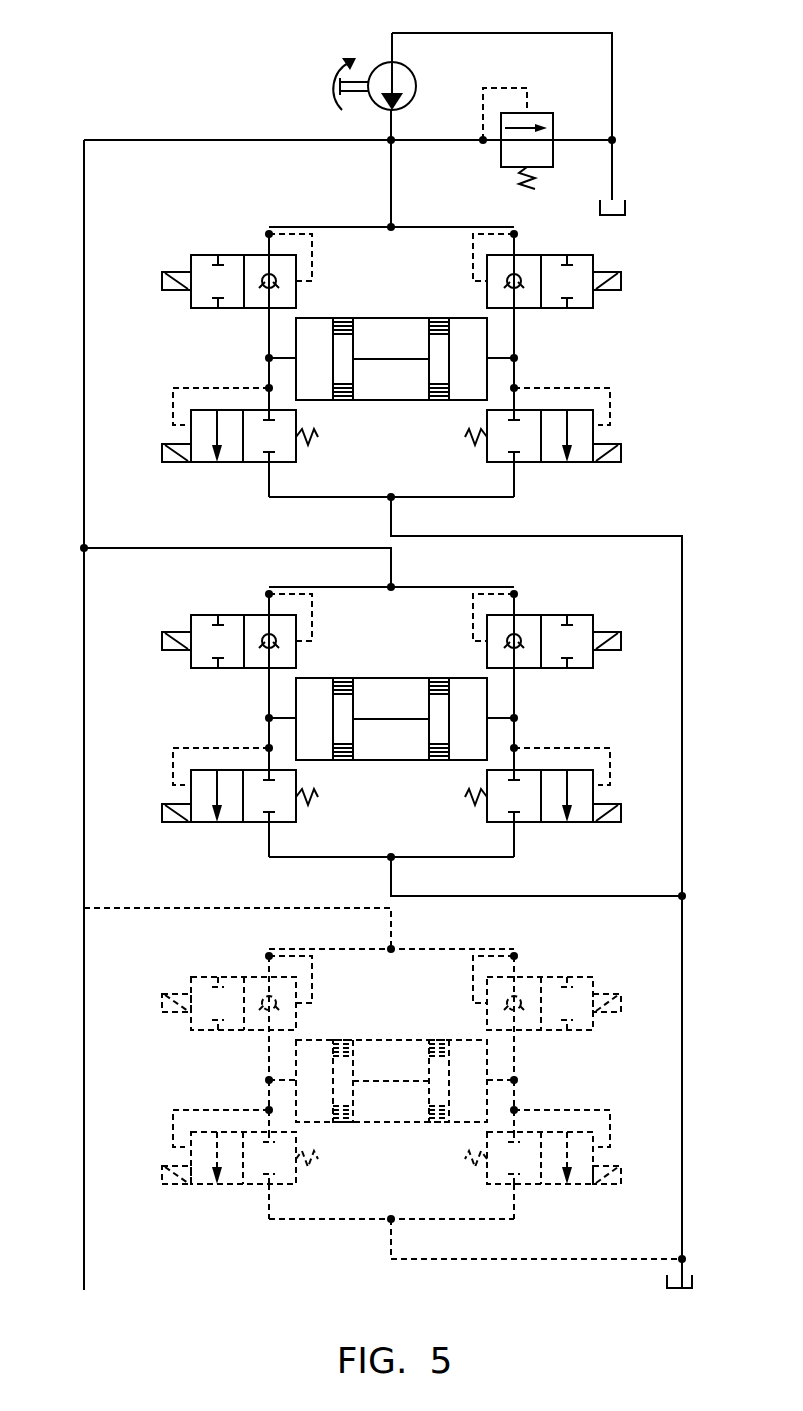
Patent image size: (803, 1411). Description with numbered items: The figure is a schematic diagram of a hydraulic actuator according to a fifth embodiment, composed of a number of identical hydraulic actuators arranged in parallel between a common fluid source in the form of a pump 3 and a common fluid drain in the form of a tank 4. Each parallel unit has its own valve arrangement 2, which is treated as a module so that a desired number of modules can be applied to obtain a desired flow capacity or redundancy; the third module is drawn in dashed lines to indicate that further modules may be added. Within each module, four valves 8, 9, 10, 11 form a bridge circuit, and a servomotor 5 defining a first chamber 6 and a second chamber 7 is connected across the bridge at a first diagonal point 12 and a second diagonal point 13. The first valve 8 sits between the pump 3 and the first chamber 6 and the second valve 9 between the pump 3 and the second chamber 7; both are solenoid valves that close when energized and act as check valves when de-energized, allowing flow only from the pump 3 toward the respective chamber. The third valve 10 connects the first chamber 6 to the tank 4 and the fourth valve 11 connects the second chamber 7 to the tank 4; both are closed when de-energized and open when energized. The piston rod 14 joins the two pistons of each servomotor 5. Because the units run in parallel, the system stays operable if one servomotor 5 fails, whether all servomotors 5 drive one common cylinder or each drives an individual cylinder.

The valve arrangement 2 is at (299, 225).
The pump 3 is at (378, 62).
The tank 4 is at (678, 1290).
The servomotor 5 is at (381, 402).
The first chamber 6 is at (312, 340).
The second chamber 7 is at (470, 348).
The first valve 8 is at (230, 253).
The second valve 9 is at (580, 255).
The third valve 10 is at (252, 463).
The fourth valve 11 is at (562, 408).
The first diagonal point 12 is at (266, 357).
The second diagonal point 13 is at (517, 356).
The piston rod 14 is at (380, 357).